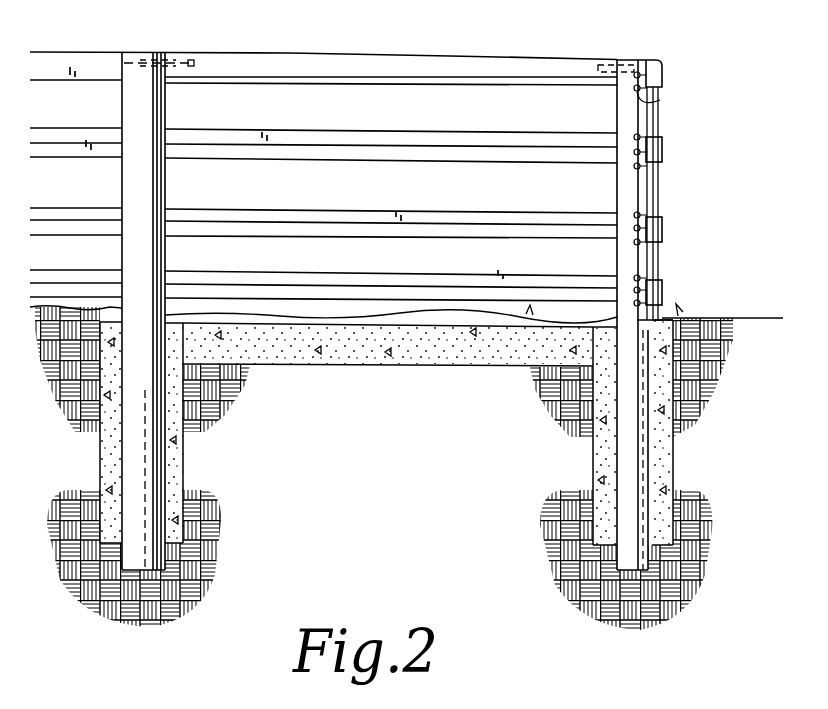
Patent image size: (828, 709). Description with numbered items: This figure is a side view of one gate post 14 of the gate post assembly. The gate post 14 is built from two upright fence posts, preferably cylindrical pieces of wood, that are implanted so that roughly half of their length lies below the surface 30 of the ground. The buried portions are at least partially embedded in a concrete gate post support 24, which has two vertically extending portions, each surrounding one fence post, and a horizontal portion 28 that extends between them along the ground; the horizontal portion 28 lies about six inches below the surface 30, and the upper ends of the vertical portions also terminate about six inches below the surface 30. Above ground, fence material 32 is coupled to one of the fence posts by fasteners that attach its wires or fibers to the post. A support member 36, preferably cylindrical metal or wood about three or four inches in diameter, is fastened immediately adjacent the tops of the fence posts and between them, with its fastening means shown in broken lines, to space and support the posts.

The gate post 14 is at (433, 42).
The gate post support 24 is at (323, 386).
The horizontal portion 28 is at (378, 366).
The surface of the ground 30 is at (718, 318).
The fence material 32 is at (44, 129).
The support member 36 is at (320, 69).